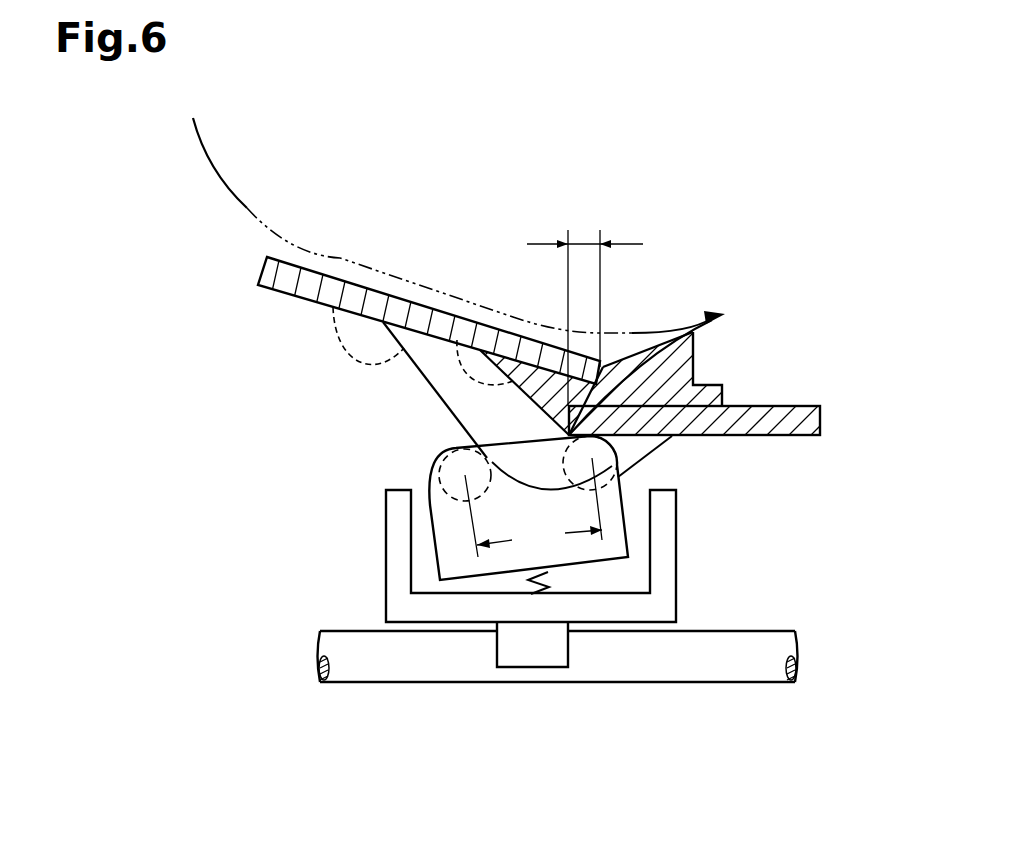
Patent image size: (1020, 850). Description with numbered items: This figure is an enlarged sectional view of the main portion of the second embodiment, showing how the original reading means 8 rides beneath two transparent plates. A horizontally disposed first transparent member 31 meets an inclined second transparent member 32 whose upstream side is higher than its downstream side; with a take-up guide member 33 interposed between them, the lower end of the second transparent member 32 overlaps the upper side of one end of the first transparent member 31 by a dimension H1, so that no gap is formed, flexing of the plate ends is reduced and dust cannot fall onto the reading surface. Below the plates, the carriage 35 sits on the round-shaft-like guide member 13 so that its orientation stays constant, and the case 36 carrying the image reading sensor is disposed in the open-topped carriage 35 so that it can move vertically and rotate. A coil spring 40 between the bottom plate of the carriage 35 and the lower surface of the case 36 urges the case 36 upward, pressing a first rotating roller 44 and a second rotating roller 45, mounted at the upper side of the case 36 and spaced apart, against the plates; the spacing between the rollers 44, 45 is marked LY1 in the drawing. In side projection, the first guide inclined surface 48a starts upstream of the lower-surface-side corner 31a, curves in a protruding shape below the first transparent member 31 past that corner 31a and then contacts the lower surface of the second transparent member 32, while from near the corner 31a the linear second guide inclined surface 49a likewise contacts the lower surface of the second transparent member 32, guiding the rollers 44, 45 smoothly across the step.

The original reading means 8 is at (592, 556).
The round-shaft-like guide member 13 is at (757, 668).
The first transparent member 31 is at (797, 423).
The lower-surface-side corner 31a is at (577, 427).
The second transparent member 32 is at (277, 293).
The take-up guide member 33 is at (680, 370).
The carriage 35 is at (662, 578).
The case 36 is at (610, 523).
The coil spring 40 is at (548, 573).
The first rotating roller 44 is at (453, 447).
The second rotating roller 45 is at (613, 447).
The first guide inclined surface 48a is at (333, 307).
The second guide inclined surface 49a is at (457, 338).
The dimension of overlapping portion H1 is at (578, 242).
The roller center distance LY1 is at (533, 507).